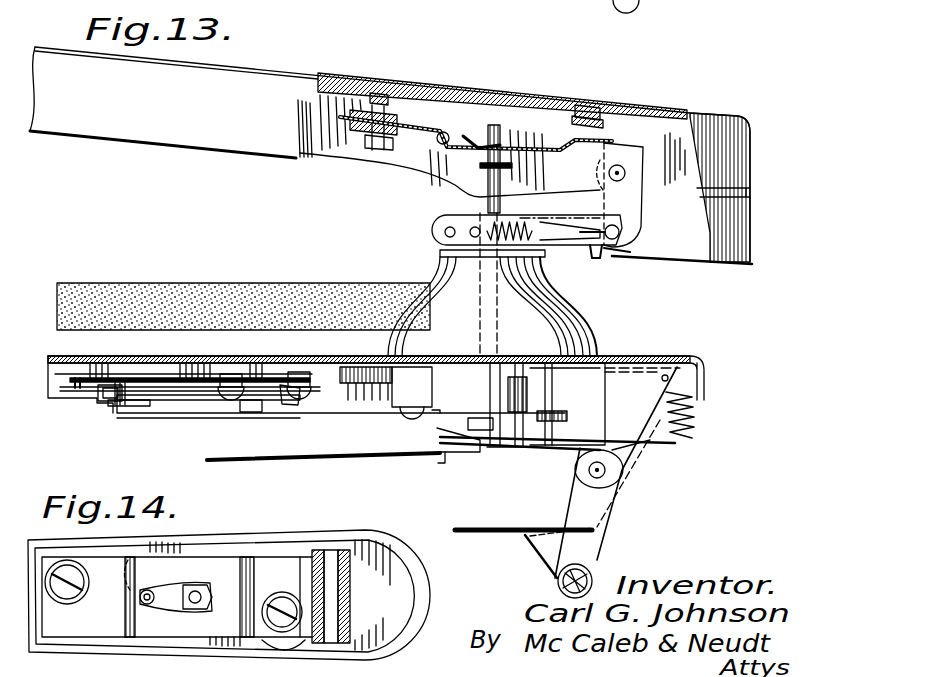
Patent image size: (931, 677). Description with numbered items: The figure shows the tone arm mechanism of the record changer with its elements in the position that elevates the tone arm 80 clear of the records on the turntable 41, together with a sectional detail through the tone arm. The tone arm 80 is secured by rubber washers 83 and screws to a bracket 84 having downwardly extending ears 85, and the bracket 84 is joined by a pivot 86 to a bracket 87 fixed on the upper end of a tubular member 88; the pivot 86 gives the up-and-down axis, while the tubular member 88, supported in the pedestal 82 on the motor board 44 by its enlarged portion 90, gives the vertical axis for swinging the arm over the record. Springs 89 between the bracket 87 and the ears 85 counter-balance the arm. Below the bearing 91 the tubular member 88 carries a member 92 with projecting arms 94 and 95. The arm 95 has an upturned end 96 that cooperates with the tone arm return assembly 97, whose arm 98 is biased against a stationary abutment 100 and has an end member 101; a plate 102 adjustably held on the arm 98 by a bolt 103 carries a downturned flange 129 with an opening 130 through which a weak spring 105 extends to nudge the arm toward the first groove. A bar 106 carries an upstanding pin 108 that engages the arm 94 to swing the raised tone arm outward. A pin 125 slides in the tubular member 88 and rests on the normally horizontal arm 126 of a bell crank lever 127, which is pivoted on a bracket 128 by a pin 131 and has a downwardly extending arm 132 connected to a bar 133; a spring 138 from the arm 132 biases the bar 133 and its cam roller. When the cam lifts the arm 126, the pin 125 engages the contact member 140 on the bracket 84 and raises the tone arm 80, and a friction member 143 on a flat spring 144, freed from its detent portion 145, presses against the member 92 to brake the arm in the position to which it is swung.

In FIG. 13, the tone arm 80 is at (228, 82).
In FIG. 13, the rubber washers 83 is at (418, 100).
In FIG. 14, the rubber washers 83 is at (64, 601).
In FIG. 13, the bracket 84 is at (423, 135).
In FIG. 14, the bracket 84 is at (130, 575).
In FIG. 13, the contact member 140 is at (478, 143).
In FIG. 14, the contact member 140 is at (175, 585).
In FIG. 13, the pin 125 is at (496, 197).
In FIG. 13, the bracket 87 is at (566, 209).
In FIG. 13, the ears 85 is at (628, 217).
In FIG. 14, the ears 85 is at (352, 638).
In FIG. 13, the pivot 86 is at (622, 165).
In FIG. 14, the pivot 86 is at (345, 552).
In FIG. 13, the enlarged portion 90 is at (440, 252).
In FIG. 13, the springs 89 is at (538, 281).
In FIG. 13, the pedestal 82 is at (565, 350).
In FIG. 13, the turntable 41 is at (235, 283).
In FIG. 13, the tone arm return assembly 97 is at (348, 372).
In FIG. 13, the arm 98 is at (160, 385).
In FIG. 13, the end member 101 is at (75, 380).
In FIG. 13, the stationary abutment 100 is at (245, 375).
In FIG. 13, the motor board 44 is at (270, 358).
In FIG. 13, the downturned flange 129 is at (97, 402).
In FIG. 13, the upturned end 96 is at (105, 408).
In FIG. 13, the opening 130 is at (108, 404).
In FIG. 13, the plate 102 is at (165, 410).
In FIG. 13, the spring 105 is at (160, 425).
In FIG. 13, the arm 95 is at (245, 412).
In FIG. 13, the bolt 103 is at (296, 412).
In FIG. 13, the member 92 is at (430, 420).
In FIG. 13, the bar 106 is at (265, 462).
In FIG. 13, the tubular member 88 is at (468, 445).
In FIG. 13, the arm 126 is at (490, 437).
In FIG. 13, the friction member 143 is at (437, 432).
In FIG. 13, the detent portion 145 is at (445, 462).
In FIG. 13, the bearing 91 is at (530, 374).
In FIG. 13, the arm 94 is at (545, 410).
In FIG. 13, the upstanding pin 108 is at (555, 424).
In FIG. 13, the bracket 128 is at (640, 410).
In FIG. 13, the flat spring 144 is at (585, 441).
In FIG. 13, the bell crank lever 127 is at (622, 516).
In FIG. 13, the pin 131 is at (620, 470).
In FIG. 13, the downwardly extending arm 132 is at (605, 549).
In FIG. 13, the bar 133 is at (484, 536).
In FIG. 13, the spring 138 is at (695, 430).